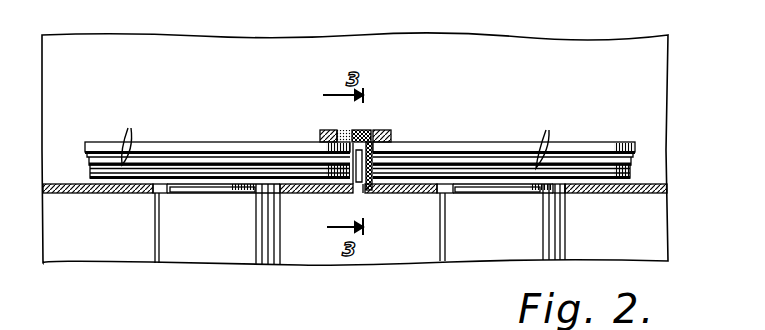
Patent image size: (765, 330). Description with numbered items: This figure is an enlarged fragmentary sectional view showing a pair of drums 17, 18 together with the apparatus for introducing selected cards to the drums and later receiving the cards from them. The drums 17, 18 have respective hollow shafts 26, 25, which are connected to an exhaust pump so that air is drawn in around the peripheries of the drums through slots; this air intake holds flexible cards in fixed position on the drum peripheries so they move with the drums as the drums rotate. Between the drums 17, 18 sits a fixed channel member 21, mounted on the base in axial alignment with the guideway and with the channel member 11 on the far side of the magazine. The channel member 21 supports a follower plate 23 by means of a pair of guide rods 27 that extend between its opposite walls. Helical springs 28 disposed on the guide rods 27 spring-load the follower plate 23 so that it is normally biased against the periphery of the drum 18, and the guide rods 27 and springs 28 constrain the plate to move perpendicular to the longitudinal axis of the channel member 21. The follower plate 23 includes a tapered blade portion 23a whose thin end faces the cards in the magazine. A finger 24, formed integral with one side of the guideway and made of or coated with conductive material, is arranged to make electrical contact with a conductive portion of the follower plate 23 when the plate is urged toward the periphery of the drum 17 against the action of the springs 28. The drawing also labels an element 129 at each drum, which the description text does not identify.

The channel member 11 is at (353, 193).
The drum 17 is at (190, 147).
The drum 18 is at (486, 146).
The clamp 129 is at (129, 126).
The fixed channel member 21 is at (318, 131).
The follower plate 23 is at (366, 130).
The blade portion 23a is at (359, 193).
The finger 24 is at (330, 193).
The hollow shaft 25 is at (468, 251).
The hollow shaft 26 is at (184, 258).
The guide rods 27 is at (337, 130).
The helical springs 28 is at (345, 130).